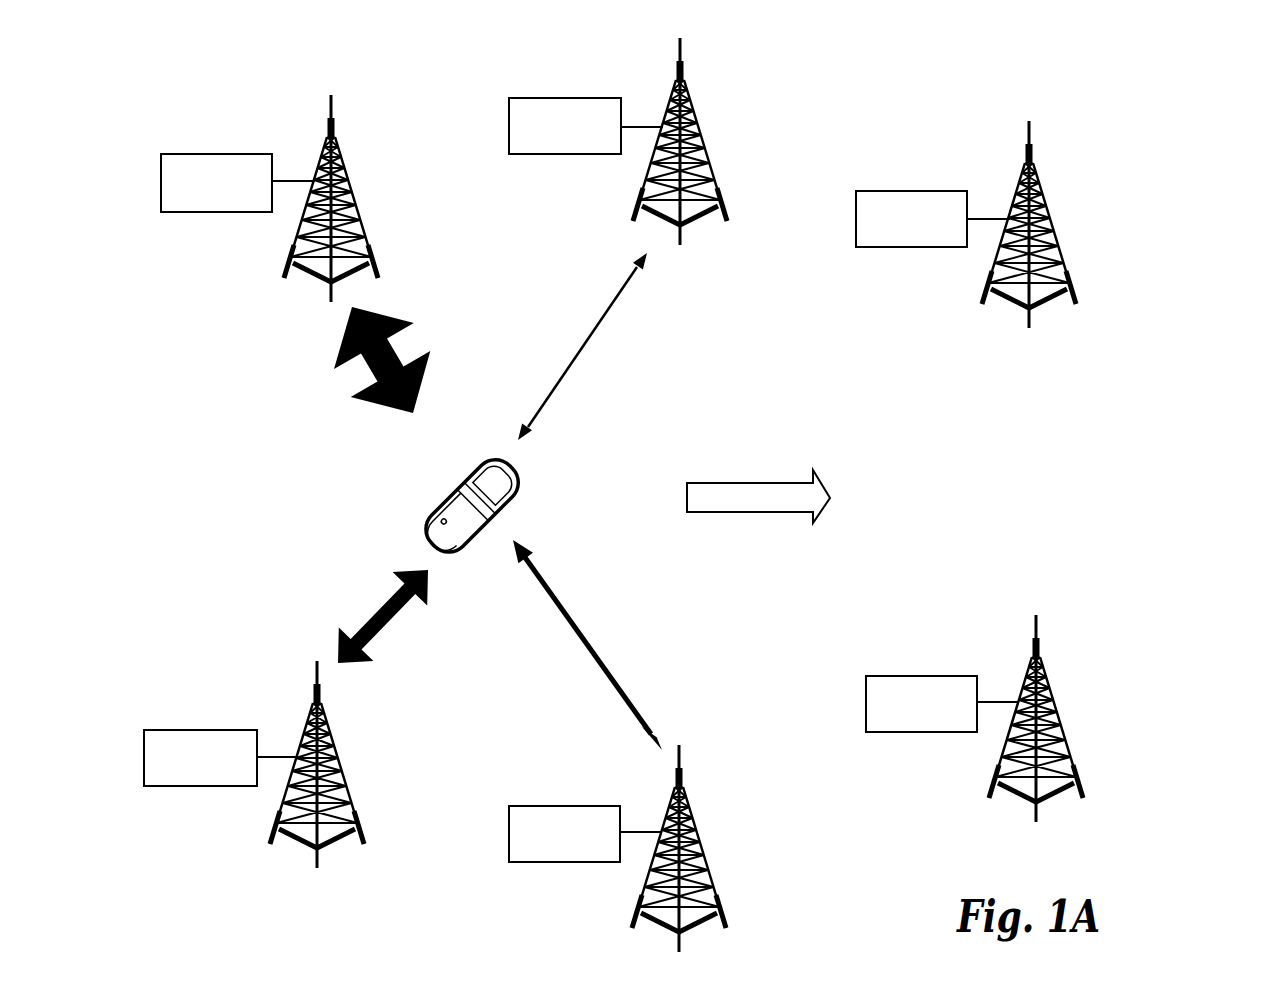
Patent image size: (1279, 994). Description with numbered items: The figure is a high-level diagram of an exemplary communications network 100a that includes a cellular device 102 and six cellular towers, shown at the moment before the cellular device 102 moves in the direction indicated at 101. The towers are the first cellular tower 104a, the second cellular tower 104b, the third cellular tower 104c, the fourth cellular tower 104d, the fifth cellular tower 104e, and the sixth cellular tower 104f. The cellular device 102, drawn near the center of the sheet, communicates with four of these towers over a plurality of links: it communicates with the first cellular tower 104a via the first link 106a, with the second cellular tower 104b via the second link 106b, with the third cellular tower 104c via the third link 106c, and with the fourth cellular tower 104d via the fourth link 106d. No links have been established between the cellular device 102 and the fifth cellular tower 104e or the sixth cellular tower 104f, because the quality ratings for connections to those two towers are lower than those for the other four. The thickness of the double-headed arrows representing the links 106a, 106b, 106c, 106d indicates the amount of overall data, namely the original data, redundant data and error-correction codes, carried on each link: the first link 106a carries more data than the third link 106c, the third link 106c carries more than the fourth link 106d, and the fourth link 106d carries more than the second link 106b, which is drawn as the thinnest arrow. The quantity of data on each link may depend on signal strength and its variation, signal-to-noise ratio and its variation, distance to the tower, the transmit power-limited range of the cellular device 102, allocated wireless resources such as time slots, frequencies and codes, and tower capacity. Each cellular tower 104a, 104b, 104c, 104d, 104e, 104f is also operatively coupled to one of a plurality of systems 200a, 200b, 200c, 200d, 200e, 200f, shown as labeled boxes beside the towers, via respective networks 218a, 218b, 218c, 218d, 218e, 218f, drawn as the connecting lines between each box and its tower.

The communications network 100a is at (1204, 95).
The direction of movement 101 is at (759, 485).
The cellular device 102 is at (480, 464).
The first cellular tower 104a is at (340, 150).
The second cellular tower 104b is at (688, 95).
The third cellular tower 104c is at (328, 720).
The fourth cellular tower 104d is at (688, 805).
The fifth cellular tower 104e is at (1038, 183).
The sixth cellular tower 104f is at (1045, 673).
The first link 106a is at (398, 316).
The second link 106b is at (595, 337).
The third link 106c is at (375, 642).
The fourth link 106d is at (580, 623).
The system 200a is at (216, 183).
The system 200b is at (565, 126).
The system 200c is at (200, 758).
The system 200d is at (564, 834).
The system 200e is at (911, 219).
The system 200f is at (921, 704).
The network 218a is at (303, 181).
The network 218b is at (653, 127).
The network 218c is at (287, 757).
The network 218d is at (646, 832).
The network 218e is at (997, 219).
The network 218f is at (1008, 702).